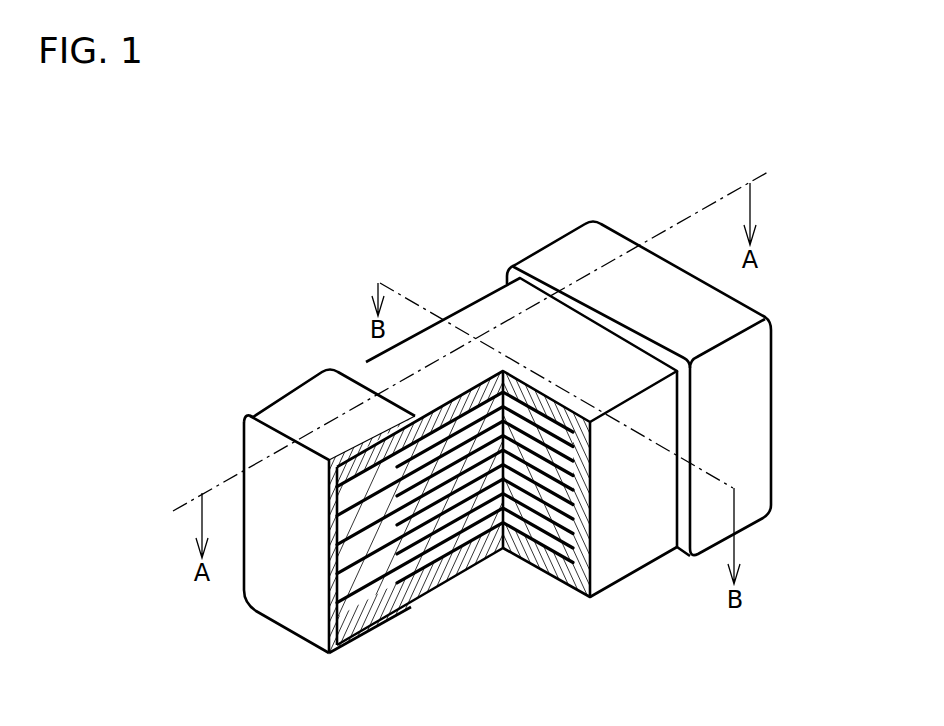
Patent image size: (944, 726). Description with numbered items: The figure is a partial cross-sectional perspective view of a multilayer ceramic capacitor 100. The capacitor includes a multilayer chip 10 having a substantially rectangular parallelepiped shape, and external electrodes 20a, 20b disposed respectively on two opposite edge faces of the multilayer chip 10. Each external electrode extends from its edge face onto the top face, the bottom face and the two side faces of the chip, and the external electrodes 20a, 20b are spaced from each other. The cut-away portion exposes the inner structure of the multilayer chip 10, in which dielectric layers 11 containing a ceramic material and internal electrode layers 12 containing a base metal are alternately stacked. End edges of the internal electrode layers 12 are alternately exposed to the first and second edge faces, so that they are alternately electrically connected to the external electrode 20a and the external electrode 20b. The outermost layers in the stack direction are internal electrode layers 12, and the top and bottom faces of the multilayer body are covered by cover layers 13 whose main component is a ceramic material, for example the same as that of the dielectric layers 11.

The multilayer ceramic capacitor 100 is at (862, 161).
The multilayer chip 10 is at (461, 479).
The dielectric layer 11 is at (443, 540).
The internal electrode layer 12 is at (413, 572).
The cover layer 13 is at (478, 317).
The external electrode 20a is at (268, 404).
The external electrode 20b is at (556, 255).